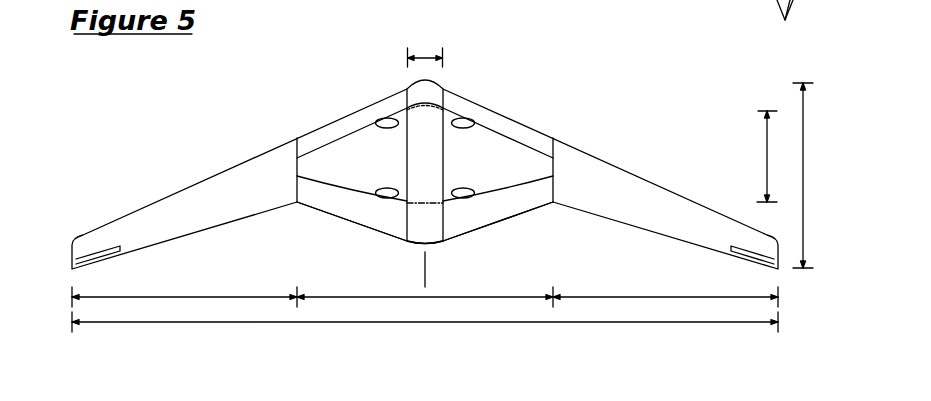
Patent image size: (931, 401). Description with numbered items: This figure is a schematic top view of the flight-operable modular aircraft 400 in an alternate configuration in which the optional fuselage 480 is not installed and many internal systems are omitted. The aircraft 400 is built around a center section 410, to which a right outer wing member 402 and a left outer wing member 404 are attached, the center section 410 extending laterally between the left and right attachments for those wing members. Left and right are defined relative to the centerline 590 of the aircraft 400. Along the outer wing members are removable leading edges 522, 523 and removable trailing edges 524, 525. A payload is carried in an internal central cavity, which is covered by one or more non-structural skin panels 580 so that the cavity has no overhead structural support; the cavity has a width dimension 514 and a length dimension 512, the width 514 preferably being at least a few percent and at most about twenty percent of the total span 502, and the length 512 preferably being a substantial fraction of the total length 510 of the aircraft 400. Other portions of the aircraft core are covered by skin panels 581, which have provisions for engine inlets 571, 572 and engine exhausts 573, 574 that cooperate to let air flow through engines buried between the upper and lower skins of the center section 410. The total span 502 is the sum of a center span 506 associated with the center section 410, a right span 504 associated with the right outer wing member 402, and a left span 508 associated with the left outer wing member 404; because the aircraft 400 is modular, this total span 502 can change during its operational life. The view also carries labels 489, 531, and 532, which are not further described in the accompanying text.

The flight-operable modular aircraft 400 is at (153, 113).
The right outer wing member 402 is at (603, 151).
The left outer wing member 404 is at (175, 193).
The center section 410 is at (322, 80).
The fuselage 480 is at (745, 0).
The component of adjacent figure 489 is at (793, 4).
The total span 502 is at (200, 322).
The right span 504 is at (625, 297).
The center span 506 is at (498, 297).
The left span 508 is at (190, 297).
The total length 510 is at (805, 147).
The length dimension 512 is at (763, 157).
The width dimension 514 is at (433, 55).
The removable leading edge 522 is at (456, 108).
The removable leading edge 523 is at (338, 116).
The removable trailing edge 524 is at (530, 210).
The removable trailing edge 525 is at (333, 215).
The apex 531 is at (449, 78).
The bottom apex 532 is at (417, 242).
The engine inlet 571 is at (393, 116).
The engine inlet 572 is at (464, 116).
The engine exhaust 573 is at (386, 199).
The engine exhaust 574 is at (463, 199).
The non-structural skin panel 580 is at (446, 144).
The skin panel 581 is at (507, 135).
The centerline 590 is at (427, 277).